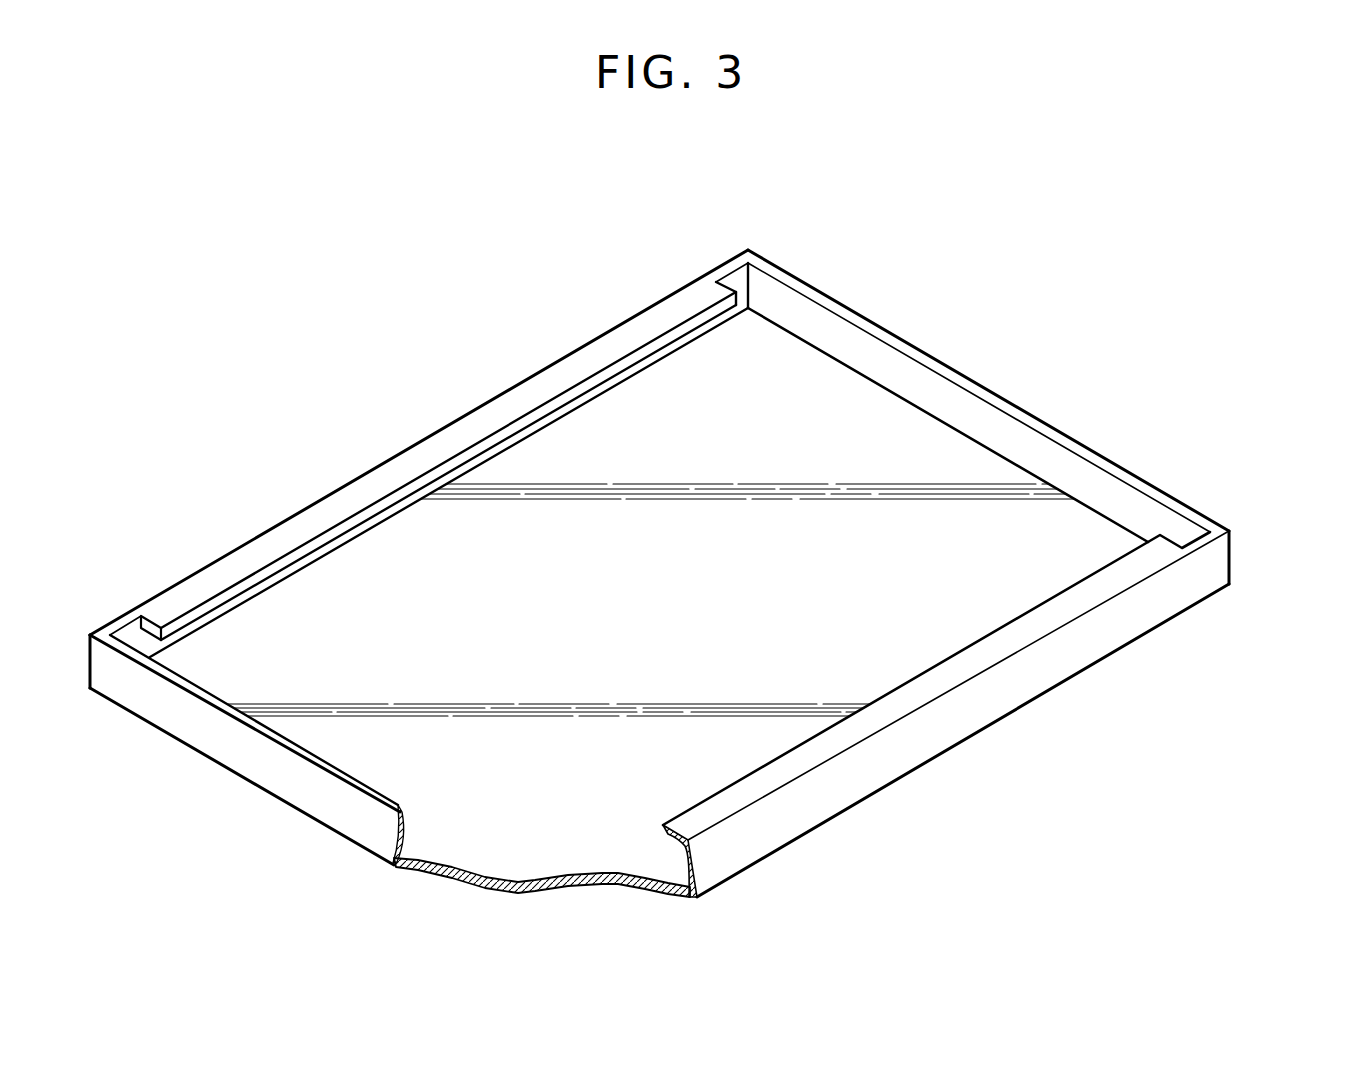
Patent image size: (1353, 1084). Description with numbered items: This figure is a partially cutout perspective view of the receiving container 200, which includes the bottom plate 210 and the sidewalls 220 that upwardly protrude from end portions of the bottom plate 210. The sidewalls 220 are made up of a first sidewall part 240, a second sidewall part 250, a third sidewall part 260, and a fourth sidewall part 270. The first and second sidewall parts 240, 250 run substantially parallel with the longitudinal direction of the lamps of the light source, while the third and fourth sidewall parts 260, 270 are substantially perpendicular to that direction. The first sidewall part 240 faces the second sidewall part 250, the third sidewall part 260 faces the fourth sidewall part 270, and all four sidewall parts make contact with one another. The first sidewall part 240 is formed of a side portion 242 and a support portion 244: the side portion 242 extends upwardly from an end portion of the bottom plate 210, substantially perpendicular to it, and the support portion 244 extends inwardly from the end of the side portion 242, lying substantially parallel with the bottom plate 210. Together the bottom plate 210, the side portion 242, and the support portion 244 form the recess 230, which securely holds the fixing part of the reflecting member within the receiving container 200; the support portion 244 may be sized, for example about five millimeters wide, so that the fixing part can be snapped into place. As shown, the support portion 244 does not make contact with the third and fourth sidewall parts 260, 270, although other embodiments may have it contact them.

The receiving container 200 is at (772, 171).
The bottom plate 210 is at (943, 615).
The sidewalls 220 is at (1186, 599).
The recess 230 is at (684, 862).
The first sidewall part 240 is at (875, 763).
The side portion 242 is at (927, 739).
The support portion 244 is at (760, 790).
The second sidewall part 250 is at (305, 516).
The third sidewall part 260 is at (259, 762).
The fourth sidewall part 270 is at (935, 382).